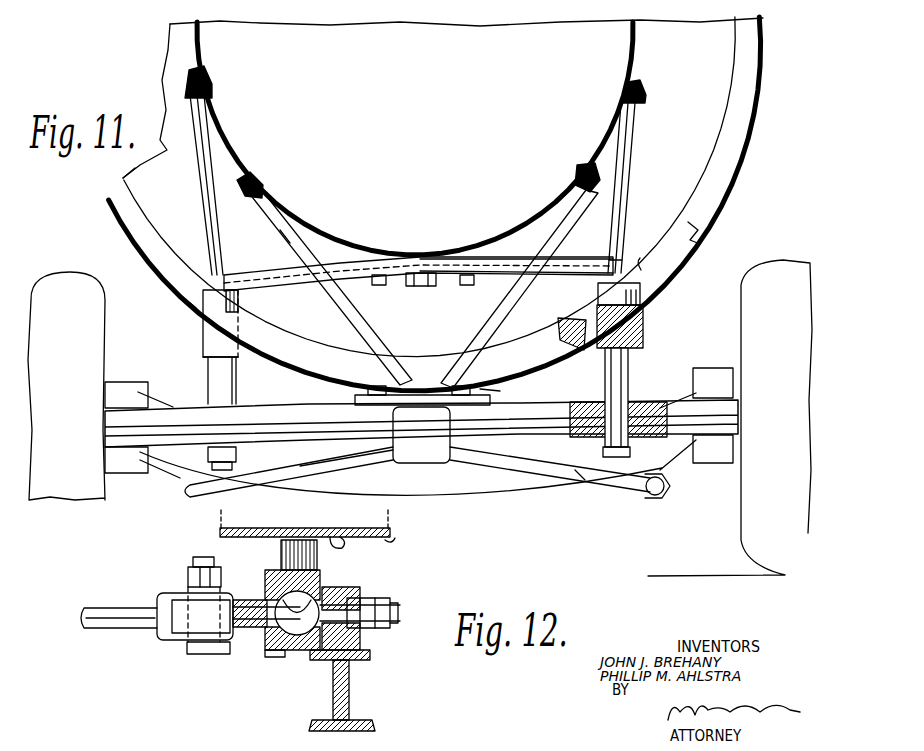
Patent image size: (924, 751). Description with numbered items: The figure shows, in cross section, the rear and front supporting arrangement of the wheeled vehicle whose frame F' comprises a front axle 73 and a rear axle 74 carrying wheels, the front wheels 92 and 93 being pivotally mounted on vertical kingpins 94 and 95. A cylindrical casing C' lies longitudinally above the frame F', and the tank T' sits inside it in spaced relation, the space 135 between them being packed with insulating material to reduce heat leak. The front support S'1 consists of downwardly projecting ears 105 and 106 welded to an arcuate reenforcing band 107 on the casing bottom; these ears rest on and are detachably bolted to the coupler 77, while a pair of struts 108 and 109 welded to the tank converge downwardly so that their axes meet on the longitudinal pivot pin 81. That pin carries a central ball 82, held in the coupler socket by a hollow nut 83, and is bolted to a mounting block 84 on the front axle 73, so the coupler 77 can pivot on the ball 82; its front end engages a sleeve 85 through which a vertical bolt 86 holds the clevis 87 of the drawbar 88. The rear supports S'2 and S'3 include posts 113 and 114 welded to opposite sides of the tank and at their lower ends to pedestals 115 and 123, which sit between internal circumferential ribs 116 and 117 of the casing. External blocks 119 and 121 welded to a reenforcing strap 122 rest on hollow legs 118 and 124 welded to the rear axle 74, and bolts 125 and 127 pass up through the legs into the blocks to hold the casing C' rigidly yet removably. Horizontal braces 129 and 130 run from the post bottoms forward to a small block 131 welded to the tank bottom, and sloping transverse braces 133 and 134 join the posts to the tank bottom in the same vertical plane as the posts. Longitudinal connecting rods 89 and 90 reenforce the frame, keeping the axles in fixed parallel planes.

In FIG. 11, the cylindrical casing C' is at (459, 204).
In FIG. 12, the cylindrical casing C' is at (411, 538).
In FIG. 11, the tank T' is at (415, 138).
In FIG. 11, the first support S'1 is at (308, 206).
In FIG. 11, the rear support S'2 is at (687, 226).
In FIG. 11, the rear support S'3 is at (125, 207).
In FIG. 11, the frame F' is at (551, 533).
In FIG. 11, the space 135 is at (689, 107).
In FIG. 11, the post 113 is at (197, 132).
In FIG. 11, the post 114 is at (637, 150).
In FIG. 11, the internal circumferential rib 116 is at (641, 260).
In FIG. 11, the transverse brace 133 is at (343, 265).
In FIG. 11, the transverse brace 134 is at (498, 260).
In FIG. 11, the longitudinal brace 129 is at (378, 278).
In FIG. 11, the longitudinal brace 130 is at (466, 278).
In FIG. 11, the small block 131 is at (417, 287).
In FIG. 11, the strut 109 is at (287, 254).
In FIG. 11, the strut 108 is at (560, 237).
In FIG. 11, the internal circumferential rib 117 is at (692, 232).
In FIG. 11, the reenforcing strap 122 is at (190, 303).
In FIG. 11, the pedestal 115 is at (240, 300).
In FIG. 11, the external block 119 is at (212, 348).
In FIG. 11, the hollow leg 118 is at (215, 380).
In FIG. 11, the coupler 77 is at (390, 395).
In FIG. 12, the coupler 77 is at (320, 578).
In FIG. 11, the ear 106 is at (368, 398).
In FIG. 11, the ear 105 is at (488, 392).
In FIG. 12, the ear 105 is at (288, 557).
In FIG. 11, the kingpin 95 is at (120, 385).
In FIG. 11, the kingpin 94 is at (718, 370).
In FIG. 11, the front wheel 93 is at (73, 472).
In FIG. 11, the front wheel 92 is at (748, 512).
In FIG. 11, the bolt 127 is at (268, 470).
In FIG. 11, the longitudinal connecting rod 90 is at (355, 462).
In FIG. 11, the longitudinal connecting rod 89 is at (510, 468).
In FIG. 11, the bolt 125 is at (613, 463).
In FIG. 11, the front axle 73 is at (533, 493).
In FIG. 12, the front axle 73 is at (350, 693).
In FIG. 11, the rear axle 74 is at (580, 488).
In FIG. 11, the pedestal 123 is at (610, 292).
In FIG. 11, the external block 121 is at (633, 330).
In FIG. 11, the hollow leg 124 is at (632, 366).
In FIG. 12, the arcuate reenforcing band 107 is at (345, 540).
In FIG. 12, the mounting block 84 is at (351, 587).
In FIG. 12, the longitudinal pivot pin 81 is at (358, 633).
In FIG. 12, the ball 82 is at (305, 642).
In FIG. 12, the hollow nut 83 is at (262, 600).
In FIG. 12, the clevis 87 is at (170, 594).
In FIG. 12, the sleeve 85 is at (186, 622).
In FIG. 12, the vertical bolt 86 is at (207, 656).
In FIG. 12, the drawbar 88 is at (105, 617).